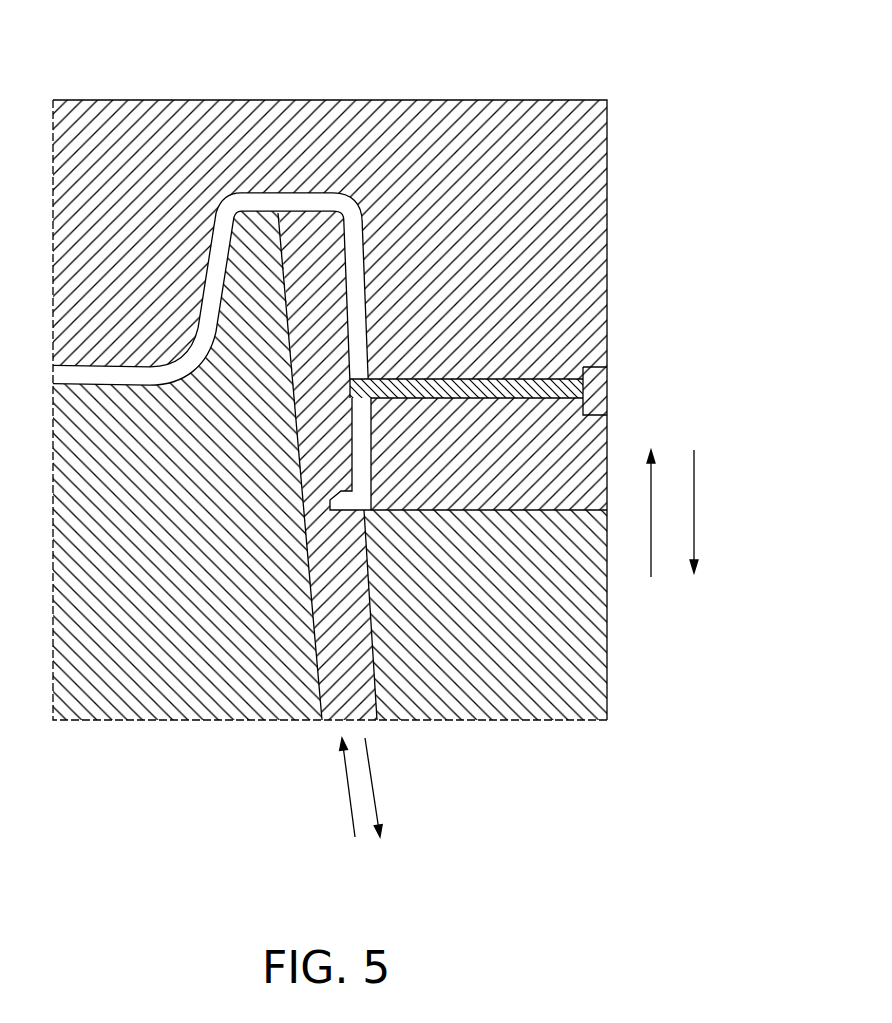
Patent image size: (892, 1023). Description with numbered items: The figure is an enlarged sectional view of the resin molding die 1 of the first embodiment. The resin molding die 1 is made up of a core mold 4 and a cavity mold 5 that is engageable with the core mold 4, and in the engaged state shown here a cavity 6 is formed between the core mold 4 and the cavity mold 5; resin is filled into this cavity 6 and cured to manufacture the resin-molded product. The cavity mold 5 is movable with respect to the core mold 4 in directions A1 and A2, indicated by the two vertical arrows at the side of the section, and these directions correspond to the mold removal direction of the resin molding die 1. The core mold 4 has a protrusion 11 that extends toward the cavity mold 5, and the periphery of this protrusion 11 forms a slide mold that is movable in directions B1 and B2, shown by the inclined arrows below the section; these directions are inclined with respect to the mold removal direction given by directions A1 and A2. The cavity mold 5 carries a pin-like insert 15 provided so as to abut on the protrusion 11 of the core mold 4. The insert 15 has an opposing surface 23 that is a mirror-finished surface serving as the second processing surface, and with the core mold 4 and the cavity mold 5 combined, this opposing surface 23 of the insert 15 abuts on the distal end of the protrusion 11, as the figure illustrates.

The resin molding die 1 is at (108, 64).
The core mold 4 is at (242, 690).
The cavity mold 5 is at (433, 136).
The cavity 6 is at (265, 197).
The protrusion 11 is at (370, 352).
The insert 15 is at (600, 390).
The opposing surface 23 is at (385, 381).
The direction A1 is at (648, 528).
The direction A2 is at (691, 528).
The direction B1 is at (346, 803).
The direction B2 is at (384, 803).